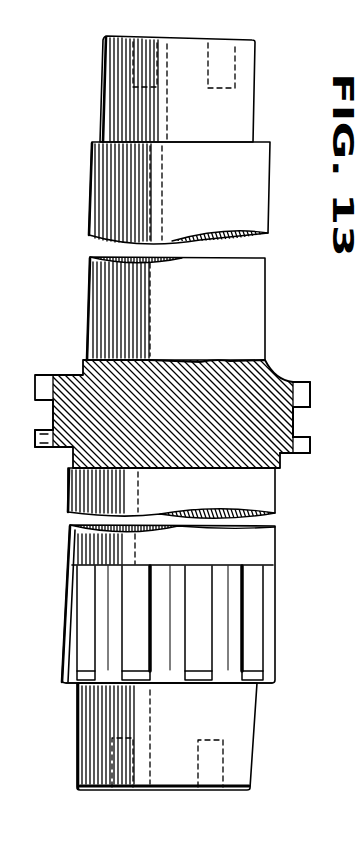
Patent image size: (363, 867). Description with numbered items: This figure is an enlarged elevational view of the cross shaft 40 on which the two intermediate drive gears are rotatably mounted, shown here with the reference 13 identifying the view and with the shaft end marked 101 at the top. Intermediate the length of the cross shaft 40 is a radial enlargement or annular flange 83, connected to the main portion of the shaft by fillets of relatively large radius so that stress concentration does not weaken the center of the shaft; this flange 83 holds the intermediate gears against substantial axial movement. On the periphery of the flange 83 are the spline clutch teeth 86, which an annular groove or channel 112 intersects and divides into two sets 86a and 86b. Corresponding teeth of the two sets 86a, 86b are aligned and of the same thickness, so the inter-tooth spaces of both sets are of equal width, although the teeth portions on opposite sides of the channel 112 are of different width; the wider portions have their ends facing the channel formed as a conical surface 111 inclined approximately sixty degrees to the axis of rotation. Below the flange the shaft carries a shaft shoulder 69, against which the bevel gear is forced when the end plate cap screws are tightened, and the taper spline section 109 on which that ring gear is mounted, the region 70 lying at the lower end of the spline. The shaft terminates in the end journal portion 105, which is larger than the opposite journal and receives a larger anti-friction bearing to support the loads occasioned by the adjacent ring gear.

The spindle assembly 13 is at (100, 140).
The upper end portion 101 is at (256, 117).
The radial enlargement 83 is at (70, 382).
The spline clutch teeth 86 is at (35, 437).
The first set of clutch teeth 86a is at (296, 383).
The second set of clutch teeth 86b is at (311, 455).
The conical surface 111 is at (315, 409).
The annular groove 112 is at (303, 423).
The cross shaft 40 is at (63, 505).
The shaft shoulder 69 is at (143, 566).
The knurled ring end 70 is at (72, 686).
The taper spline section 109 is at (282, 637).
The journal portion 105 is at (260, 765).